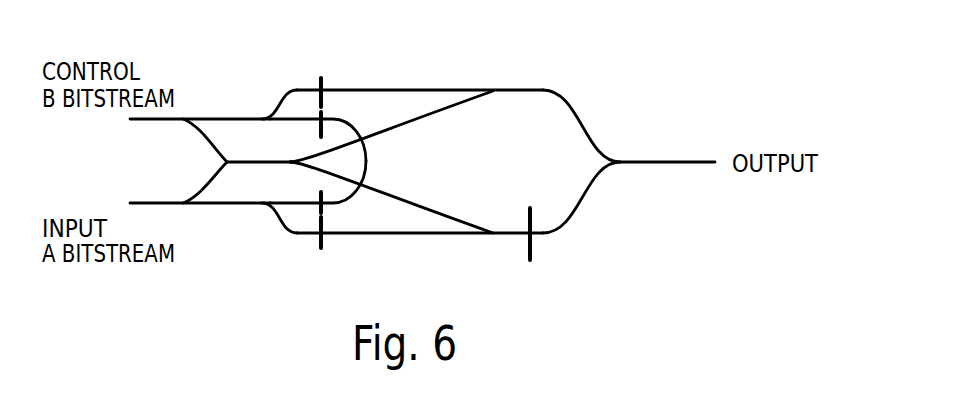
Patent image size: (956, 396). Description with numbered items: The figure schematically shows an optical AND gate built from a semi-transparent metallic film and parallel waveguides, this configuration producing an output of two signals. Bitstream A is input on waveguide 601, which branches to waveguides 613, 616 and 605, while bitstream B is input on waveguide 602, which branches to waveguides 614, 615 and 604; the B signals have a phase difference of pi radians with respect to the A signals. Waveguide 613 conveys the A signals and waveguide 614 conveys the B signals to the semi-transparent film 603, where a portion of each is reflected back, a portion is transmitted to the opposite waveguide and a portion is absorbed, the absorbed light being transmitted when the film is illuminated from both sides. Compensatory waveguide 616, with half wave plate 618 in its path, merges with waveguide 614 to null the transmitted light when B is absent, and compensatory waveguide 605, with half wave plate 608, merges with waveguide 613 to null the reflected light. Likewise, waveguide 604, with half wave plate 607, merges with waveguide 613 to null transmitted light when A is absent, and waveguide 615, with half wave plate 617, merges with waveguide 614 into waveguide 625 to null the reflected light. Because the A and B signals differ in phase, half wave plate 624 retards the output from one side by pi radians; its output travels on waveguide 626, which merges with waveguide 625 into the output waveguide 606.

The waveguide 601 is at (160, 202).
The waveguide 602 is at (163, 120).
The semi-transparent film 603 is at (224, 157).
The waveguide 604 is at (284, 121).
The waveguide 605 is at (277, 220).
The output waveguide 606 is at (657, 158).
The half wave plate 607 is at (323, 115).
The half wave plate 608 is at (323, 249).
The waveguide 613 is at (203, 190).
The waveguide 614 is at (203, 140).
The waveguide 615 is at (281, 96).
The waveguide 616 is at (296, 190).
The half wave plate 617 is at (323, 75).
The half wave plate 618 is at (323, 210).
The half wave plate 624 is at (532, 208).
The waveguide 625 is at (585, 120).
The waveguide 626 is at (577, 220).